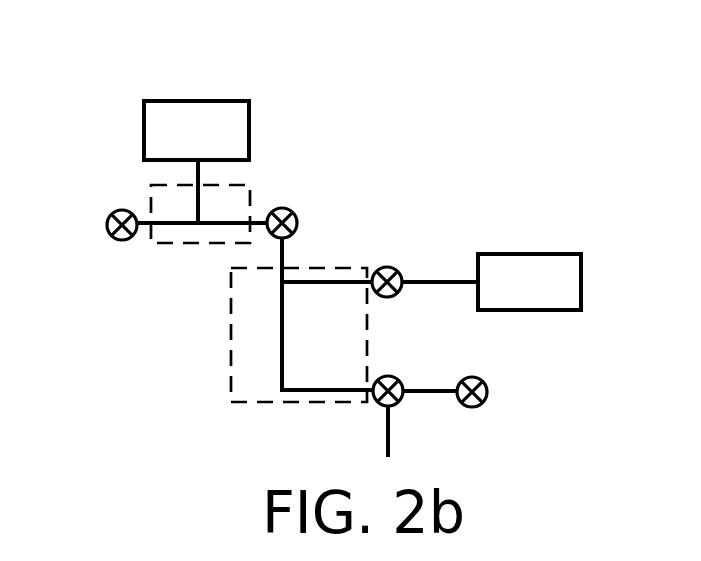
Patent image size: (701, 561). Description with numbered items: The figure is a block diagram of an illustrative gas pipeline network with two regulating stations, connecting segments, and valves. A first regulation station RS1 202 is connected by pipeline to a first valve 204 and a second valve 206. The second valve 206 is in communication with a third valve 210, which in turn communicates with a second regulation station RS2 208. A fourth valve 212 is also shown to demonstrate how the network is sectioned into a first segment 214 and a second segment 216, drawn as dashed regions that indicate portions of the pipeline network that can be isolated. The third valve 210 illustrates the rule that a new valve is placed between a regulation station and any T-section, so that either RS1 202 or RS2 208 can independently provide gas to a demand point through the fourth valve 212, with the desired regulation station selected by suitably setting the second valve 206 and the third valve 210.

The first regulation station 202 is at (202, 98).
The first valve 204 is at (106, 227).
The second valve 206 is at (297, 225).
The second regulation station 208 is at (537, 250).
The third valve 210 is at (385, 262).
The fourth valve 212 is at (385, 373).
The first segment 214 is at (195, 247).
The second segment 216 is at (230, 372).